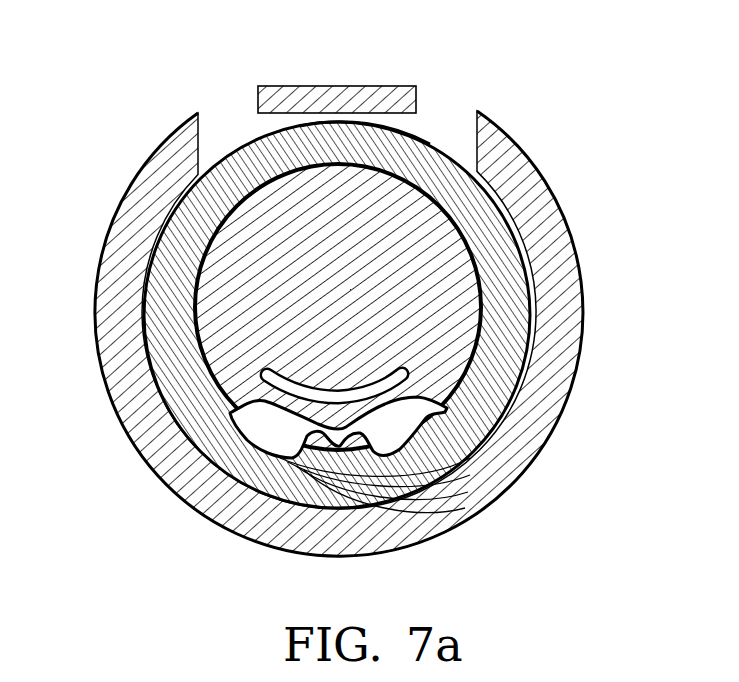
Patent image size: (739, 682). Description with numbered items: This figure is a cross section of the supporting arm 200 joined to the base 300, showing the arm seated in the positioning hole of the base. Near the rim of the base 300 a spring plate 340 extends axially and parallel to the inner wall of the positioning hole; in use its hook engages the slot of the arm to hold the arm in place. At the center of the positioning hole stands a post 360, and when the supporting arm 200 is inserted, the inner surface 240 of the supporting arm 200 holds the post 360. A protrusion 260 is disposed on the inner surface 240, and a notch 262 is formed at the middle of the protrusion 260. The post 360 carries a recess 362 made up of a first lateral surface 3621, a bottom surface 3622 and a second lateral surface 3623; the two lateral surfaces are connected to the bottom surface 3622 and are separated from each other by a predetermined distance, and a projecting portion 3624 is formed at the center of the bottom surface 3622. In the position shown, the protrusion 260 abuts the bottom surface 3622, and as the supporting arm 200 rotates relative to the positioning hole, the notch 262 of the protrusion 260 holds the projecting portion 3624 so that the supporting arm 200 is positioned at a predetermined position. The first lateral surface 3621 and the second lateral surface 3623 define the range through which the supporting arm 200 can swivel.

The supporting arm 200 is at (483, 212).
The inner surface 240 is at (478, 262).
The protrusion 260 is at (380, 406).
The notch 262 is at (285, 386).
The base 300 is at (575, 307).
The spring plate 340 is at (357, 91).
The post 360 is at (390, 160).
The recess 362 is at (466, 525).
The first lateral surface 3621 is at (470, 458).
The bottom surface 3622 is at (470, 475).
The projecting portion 3624 is at (468, 492).
The second lateral surface 3623 is at (465, 508).